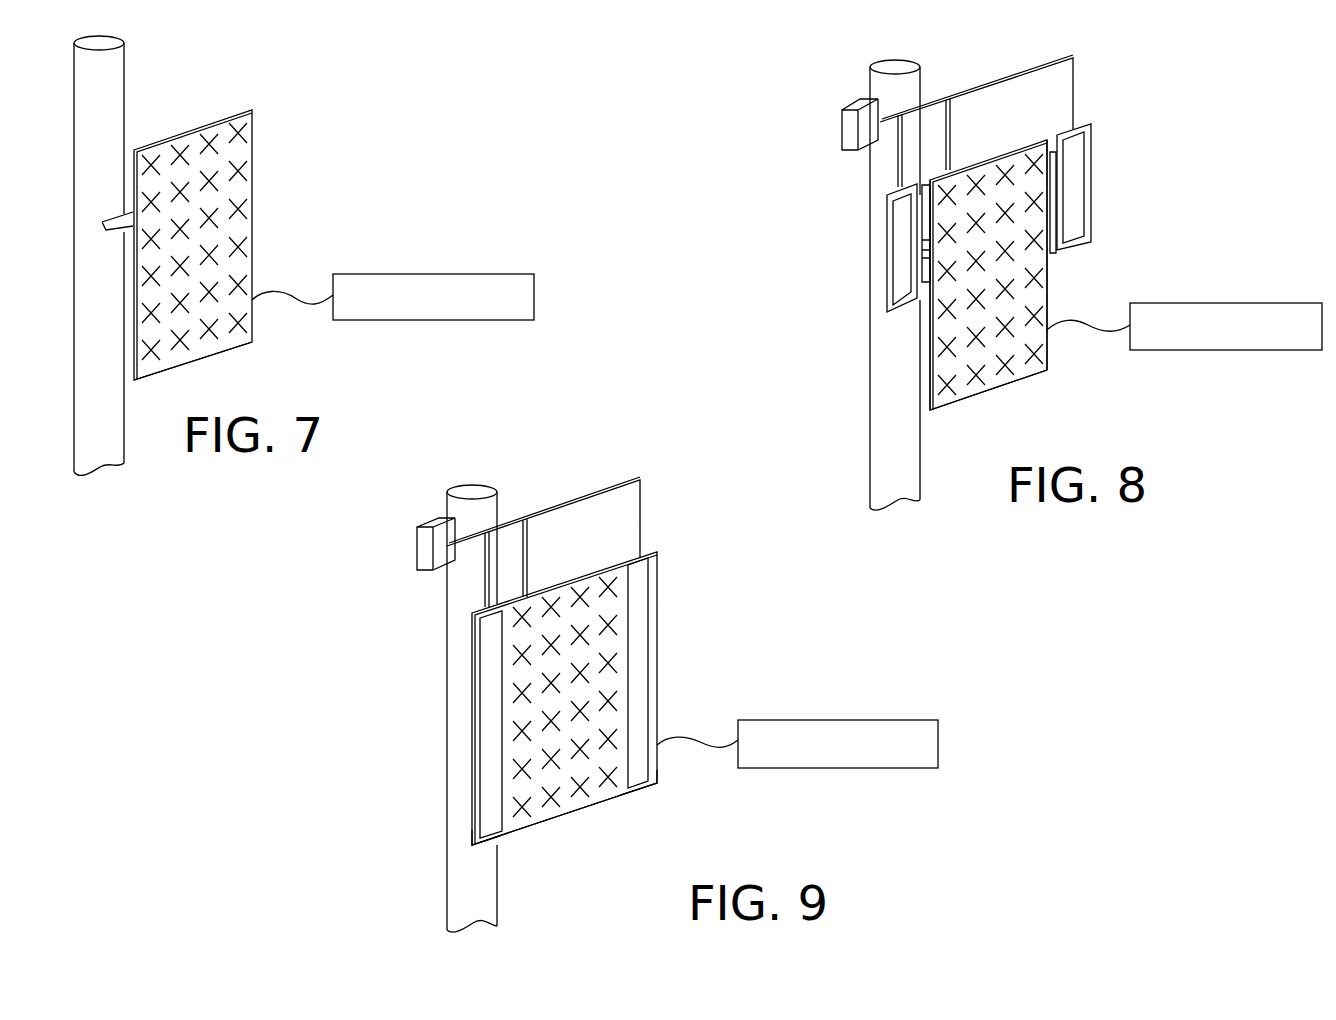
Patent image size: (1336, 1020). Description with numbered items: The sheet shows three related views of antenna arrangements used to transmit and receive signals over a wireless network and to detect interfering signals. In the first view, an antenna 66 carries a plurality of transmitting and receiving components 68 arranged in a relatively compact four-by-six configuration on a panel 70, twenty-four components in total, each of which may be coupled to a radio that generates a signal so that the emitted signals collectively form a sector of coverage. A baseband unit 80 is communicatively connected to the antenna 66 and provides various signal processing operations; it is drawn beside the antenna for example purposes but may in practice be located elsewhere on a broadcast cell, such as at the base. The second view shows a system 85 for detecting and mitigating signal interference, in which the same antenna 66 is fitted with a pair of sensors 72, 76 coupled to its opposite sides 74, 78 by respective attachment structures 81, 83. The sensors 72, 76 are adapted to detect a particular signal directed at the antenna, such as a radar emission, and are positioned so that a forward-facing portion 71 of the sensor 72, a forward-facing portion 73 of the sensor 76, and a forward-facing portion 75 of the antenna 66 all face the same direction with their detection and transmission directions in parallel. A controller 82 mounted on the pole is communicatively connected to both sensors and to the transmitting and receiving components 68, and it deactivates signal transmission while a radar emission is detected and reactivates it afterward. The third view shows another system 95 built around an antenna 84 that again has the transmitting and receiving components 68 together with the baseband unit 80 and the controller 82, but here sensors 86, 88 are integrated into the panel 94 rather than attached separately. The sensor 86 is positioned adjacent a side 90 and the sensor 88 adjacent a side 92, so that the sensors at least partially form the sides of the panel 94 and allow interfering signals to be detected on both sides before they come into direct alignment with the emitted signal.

In FIG. 7, the antenna 66 is at (246, 114).
In FIG. 7, the transmitting and receiving components 68 is at (246, 250).
In FIG. 8, the transmitting and receiving components 68 is at (1037, 195).
In FIG. 9, the transmitting and receiving components 68 is at (608, 585).
In FIG. 7, the panel 70 is at (222, 346).
In FIG. 8, the panel 70 is at (1018, 370).
In FIG. 7, the baseband unit 80 is at (490, 274).
In FIG. 8, the baseband unit 80 is at (1280, 303).
In FIG. 9, the baseband unit 80 is at (900, 720).
In FIG. 8, the controller 82 is at (853, 104).
In FIG. 9, the controller 82 is at (428, 525).
In FIG. 8, the system 85 is at (1016, 53).
In FIG. 8, the attachment structure 81 is at (922, 184).
In FIG. 8, the attachment structure 83 is at (1052, 152).
In FIG. 8, the sensor 72 is at (902, 236).
In FIG. 8, the forward-facing portion 71 is at (905, 270).
In FIG. 8, the side 74 is at (930, 372).
In FIG. 8, the forward-facing portion 75 is at (962, 390).
In FIG. 8, the side 78 is at (1050, 348).
In FIG. 8, the sensor 76 is at (1070, 172).
In FIG. 8, the forward-facing portion 73 is at (1075, 203).
In FIG. 9, the system 95 is at (611, 434).
In FIG. 9, the antenna 84 is at (600, 572).
In FIG. 9, the sensor 86 is at (492, 740).
In FIG. 9, the sensor 88 is at (642, 648).
In FIG. 9, the panel 94 is at (568, 806).
In FIG. 9, the side 92 is at (646, 797).
In FIG. 9, the side 90 is at (485, 852).